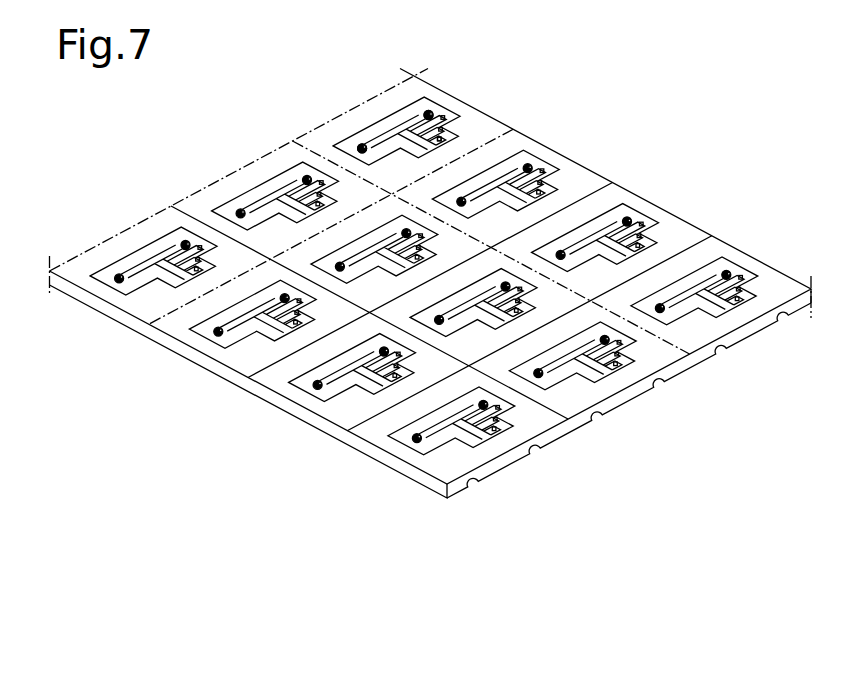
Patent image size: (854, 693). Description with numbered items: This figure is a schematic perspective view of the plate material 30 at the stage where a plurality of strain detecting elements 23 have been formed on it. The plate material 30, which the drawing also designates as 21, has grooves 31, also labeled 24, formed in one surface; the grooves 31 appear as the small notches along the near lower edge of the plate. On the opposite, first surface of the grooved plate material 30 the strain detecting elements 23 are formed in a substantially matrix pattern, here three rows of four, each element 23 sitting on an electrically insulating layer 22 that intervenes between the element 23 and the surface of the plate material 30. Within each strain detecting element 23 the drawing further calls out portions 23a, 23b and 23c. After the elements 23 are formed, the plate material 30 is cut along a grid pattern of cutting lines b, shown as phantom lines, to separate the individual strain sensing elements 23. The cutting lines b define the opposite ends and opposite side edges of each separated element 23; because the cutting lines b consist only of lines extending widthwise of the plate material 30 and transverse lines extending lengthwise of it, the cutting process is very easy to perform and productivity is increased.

The substrate 21 is at (362, 445).
The electrically insulating layer 22 is at (285, 173).
The strain detecting element 23 is at (260, 192).
The first terminal portion of resistor pattern 23a is at (355, 176).
The second terminal portion of resistor pattern 23b is at (415, 120).
The trimming portion of resistor pattern 23c is at (448, 143).
The notch 24 is at (540, 448).
The plate material 30 is at (431, 296).
The groove 31 is at (629, 431).
The cutting line b is at (582, 195).